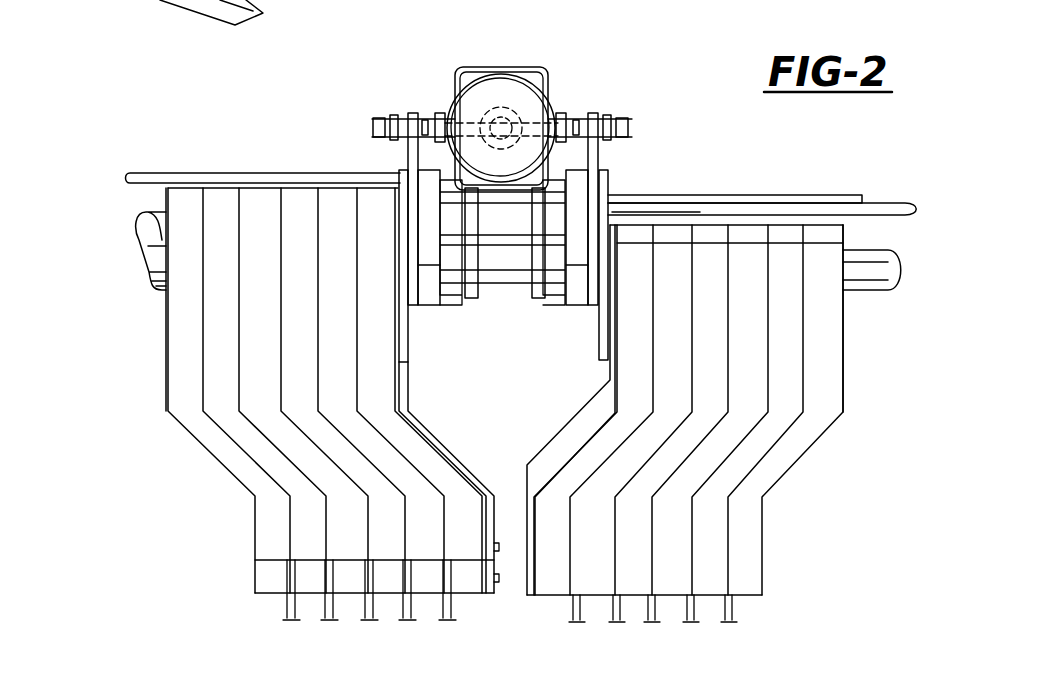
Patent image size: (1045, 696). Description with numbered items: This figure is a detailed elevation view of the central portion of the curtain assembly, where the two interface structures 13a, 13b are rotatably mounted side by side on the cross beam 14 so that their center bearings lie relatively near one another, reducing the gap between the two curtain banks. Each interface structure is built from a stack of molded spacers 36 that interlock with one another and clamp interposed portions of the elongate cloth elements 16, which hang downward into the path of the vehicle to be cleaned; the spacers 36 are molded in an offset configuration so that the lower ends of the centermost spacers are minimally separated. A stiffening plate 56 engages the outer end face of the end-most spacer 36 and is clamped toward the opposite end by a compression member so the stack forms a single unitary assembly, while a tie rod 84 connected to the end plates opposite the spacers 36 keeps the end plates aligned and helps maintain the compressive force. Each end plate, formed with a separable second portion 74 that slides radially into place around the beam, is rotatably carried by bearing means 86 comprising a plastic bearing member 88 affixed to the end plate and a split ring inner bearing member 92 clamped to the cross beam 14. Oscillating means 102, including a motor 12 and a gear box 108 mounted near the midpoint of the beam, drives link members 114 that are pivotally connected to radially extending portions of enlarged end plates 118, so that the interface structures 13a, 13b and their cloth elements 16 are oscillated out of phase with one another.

The oscillating means 102 is at (435, 85).
The gear box 108 is at (532, 70).
The motor 12 is at (553, 104).
The link member 114 is at (399, 128).
The enlarged end plate 118 is at (408, 150).
The tie rod 84 is at (217, 173).
The cross beam 14 is at (152, 284).
The plastic bearing member 88 is at (600, 287).
The second portion of end plate 74 is at (408, 348).
The spacer 36 is at (178, 360).
The bearing means 86 is at (450, 306).
The split ring inner bearing member 92 is at (556, 294).
The stiffening plate 56 is at (556, 437).
The first interface structure 13a is at (186, 493).
The second interface structure 13b is at (852, 450).
The elongate cloth element 16 is at (284, 603).